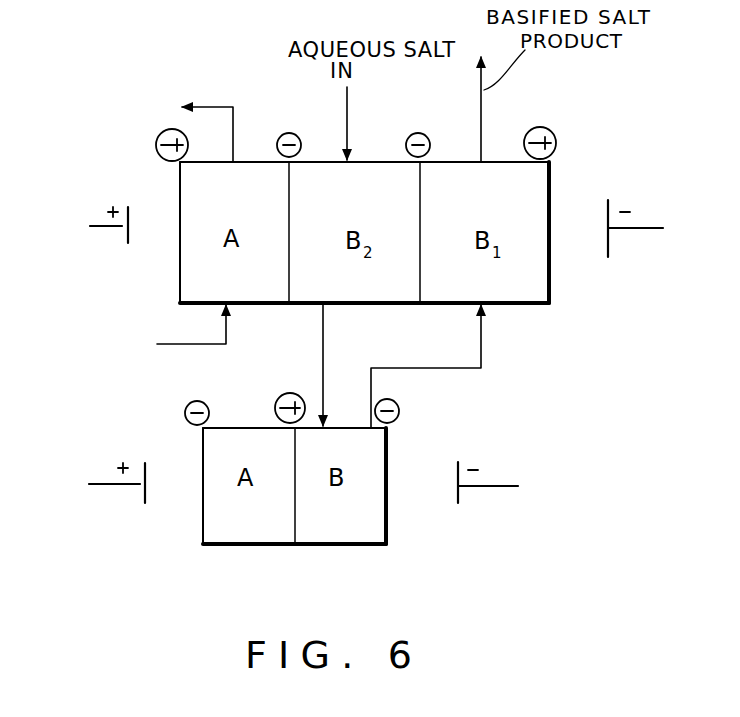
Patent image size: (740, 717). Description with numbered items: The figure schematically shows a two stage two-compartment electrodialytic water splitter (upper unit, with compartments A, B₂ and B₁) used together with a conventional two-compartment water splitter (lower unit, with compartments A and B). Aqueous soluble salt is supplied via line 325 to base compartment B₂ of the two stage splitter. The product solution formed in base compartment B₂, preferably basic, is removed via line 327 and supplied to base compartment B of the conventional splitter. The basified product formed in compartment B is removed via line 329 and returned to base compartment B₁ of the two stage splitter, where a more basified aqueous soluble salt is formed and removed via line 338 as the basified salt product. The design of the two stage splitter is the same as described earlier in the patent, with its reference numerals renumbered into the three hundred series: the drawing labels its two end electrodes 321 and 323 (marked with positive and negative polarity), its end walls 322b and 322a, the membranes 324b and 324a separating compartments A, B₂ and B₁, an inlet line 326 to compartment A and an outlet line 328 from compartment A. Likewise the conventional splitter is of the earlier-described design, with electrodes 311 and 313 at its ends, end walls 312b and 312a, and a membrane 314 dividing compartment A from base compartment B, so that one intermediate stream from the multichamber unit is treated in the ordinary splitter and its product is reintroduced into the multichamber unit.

The positive electrode of second cell 311 is at (125, 486).
The second cell wall (right) 312a is at (388, 525).
The second cell wall (left/bottom) 312b is at (202, 532).
The negative electrode of second cell 313 is at (492, 488).
The membrane of second cell 314 is at (296, 523).
The positive electrode of first cell 321 is at (103, 226).
The first cell wall (right) 322a is at (551, 282).
The first cell wall (left/bottom) 322b is at (178, 284).
The negative electrode of first cell 323 is at (640, 230).
The membrane between B2 and B1 324a is at (419, 277).
The membrane between A and B2 324b is at (288, 275).
The line 325 is at (348, 118).
The inlet line to compartment A 326 is at (182, 346).
The line 327 is at (322, 366).
The outlet line from compartment A 328 is at (213, 107).
The line 329 is at (437, 370).
The line 338 is at (484, 130).